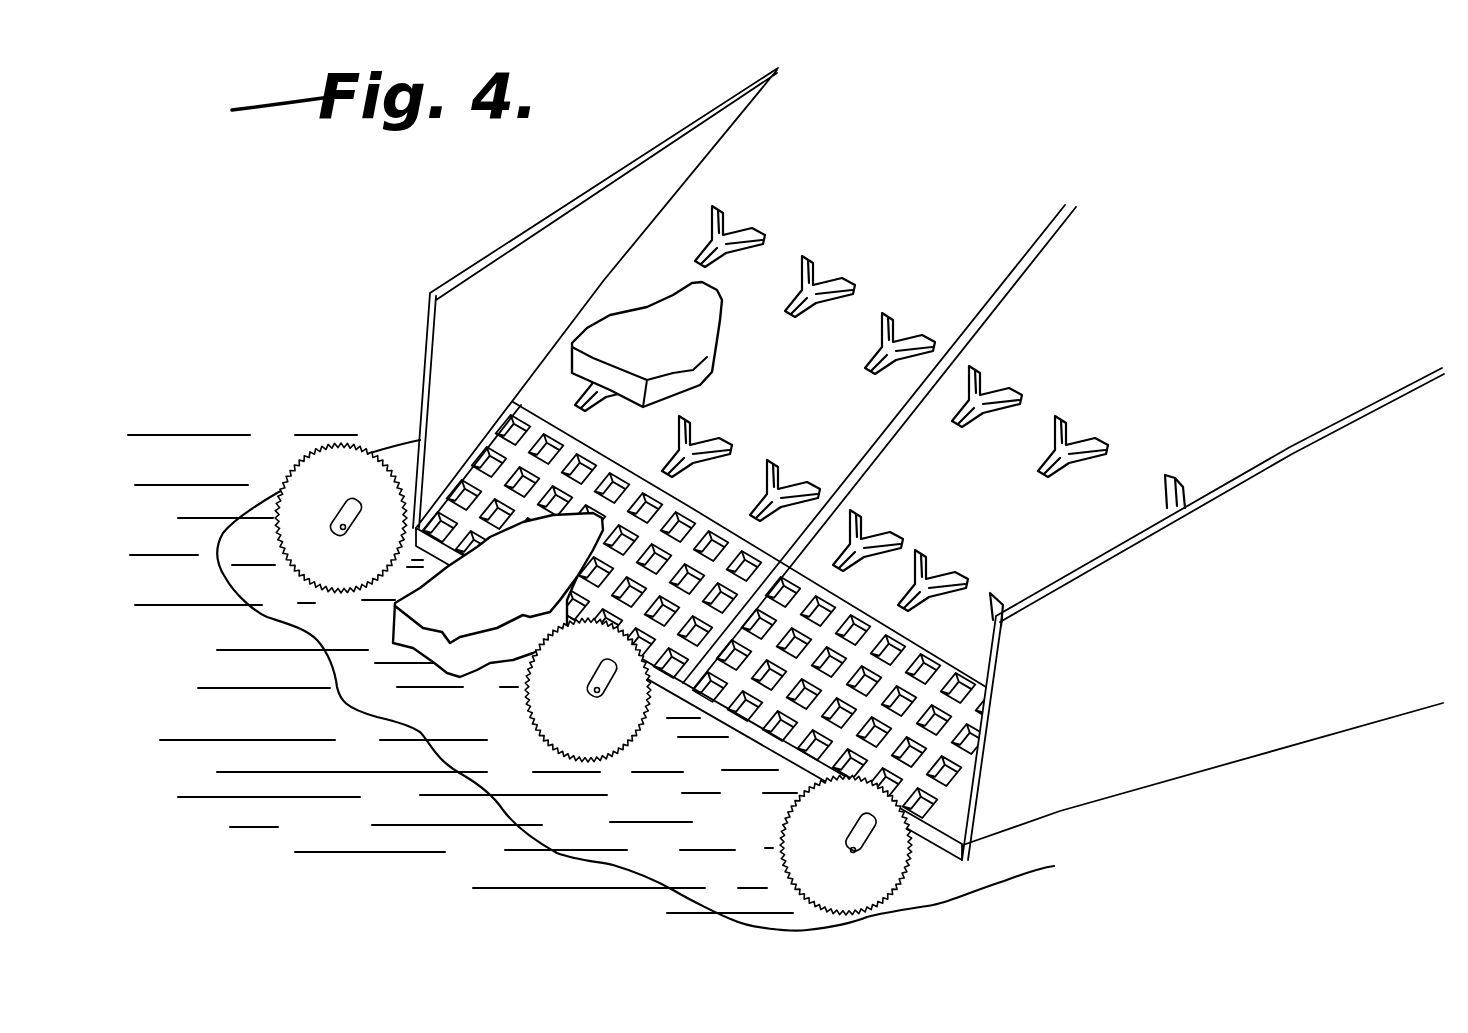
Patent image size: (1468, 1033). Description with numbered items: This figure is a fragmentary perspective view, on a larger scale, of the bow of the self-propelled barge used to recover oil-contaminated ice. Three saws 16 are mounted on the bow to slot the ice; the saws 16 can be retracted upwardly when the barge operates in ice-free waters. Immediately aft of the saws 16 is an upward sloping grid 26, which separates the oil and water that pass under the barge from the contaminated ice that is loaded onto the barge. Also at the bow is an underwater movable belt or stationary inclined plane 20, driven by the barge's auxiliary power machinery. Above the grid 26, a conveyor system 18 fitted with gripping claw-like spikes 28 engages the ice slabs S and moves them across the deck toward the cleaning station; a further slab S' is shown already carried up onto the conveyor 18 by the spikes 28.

The saws 16 is at (343, 580).
The conveyor 18 is at (945, 291).
The underwater movable belt or stationary inclined plane 20 is at (917, 558).
The upward sloping grid 26 is at (665, 515).
The gripping claw-like spikes 28 is at (798, 317).
The ice slabs S is at (498, 618).
The slab S' is at (670, 344).